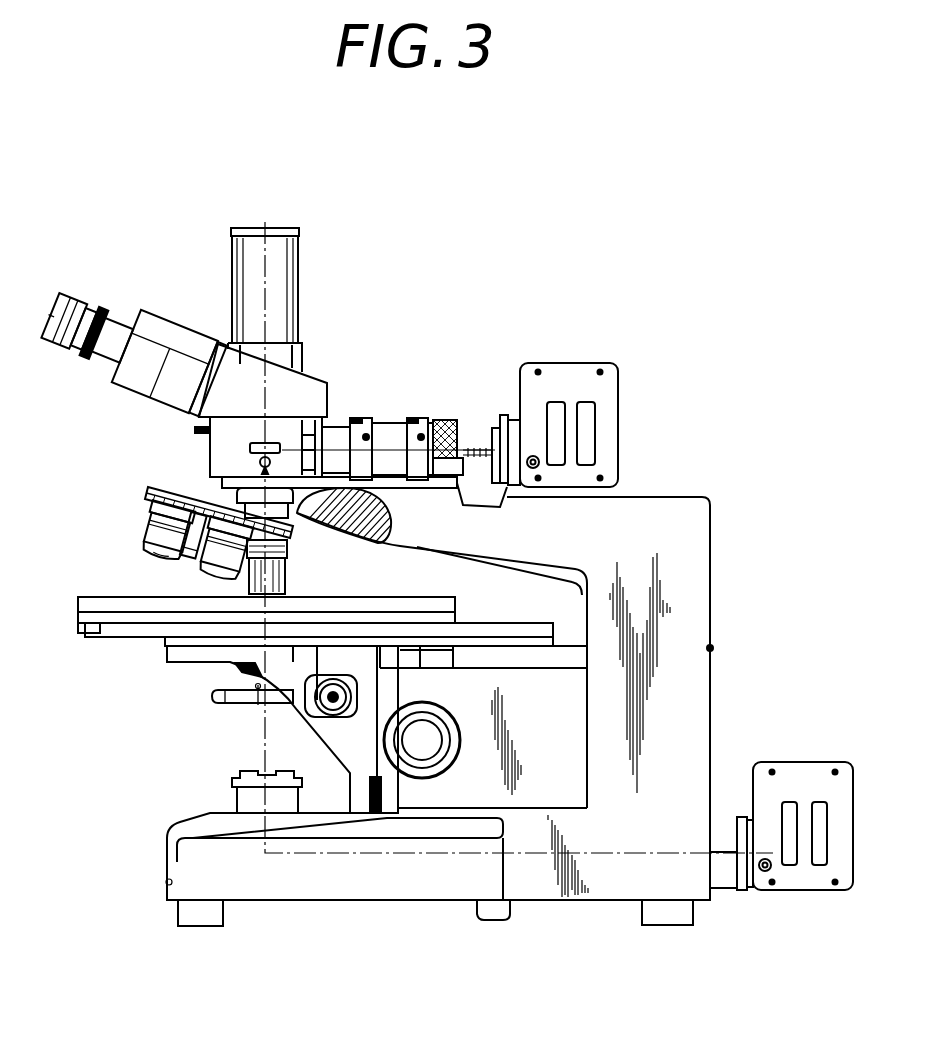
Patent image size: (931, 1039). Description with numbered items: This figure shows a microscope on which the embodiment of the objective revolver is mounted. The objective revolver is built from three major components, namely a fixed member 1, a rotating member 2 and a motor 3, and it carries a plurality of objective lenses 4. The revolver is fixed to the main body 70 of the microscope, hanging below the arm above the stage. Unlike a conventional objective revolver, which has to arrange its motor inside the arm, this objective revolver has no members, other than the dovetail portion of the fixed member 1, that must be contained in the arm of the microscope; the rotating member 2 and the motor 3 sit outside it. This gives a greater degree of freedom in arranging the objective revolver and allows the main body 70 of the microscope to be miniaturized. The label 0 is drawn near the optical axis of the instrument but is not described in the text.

The optical axis 0 is at (266, 720).
The fixed member 1 is at (177, 495).
The rotating member 2 is at (157, 508).
The motor 3 is at (197, 565).
The objective lenses 4 is at (157, 542).
The main body 70 is at (662, 513).